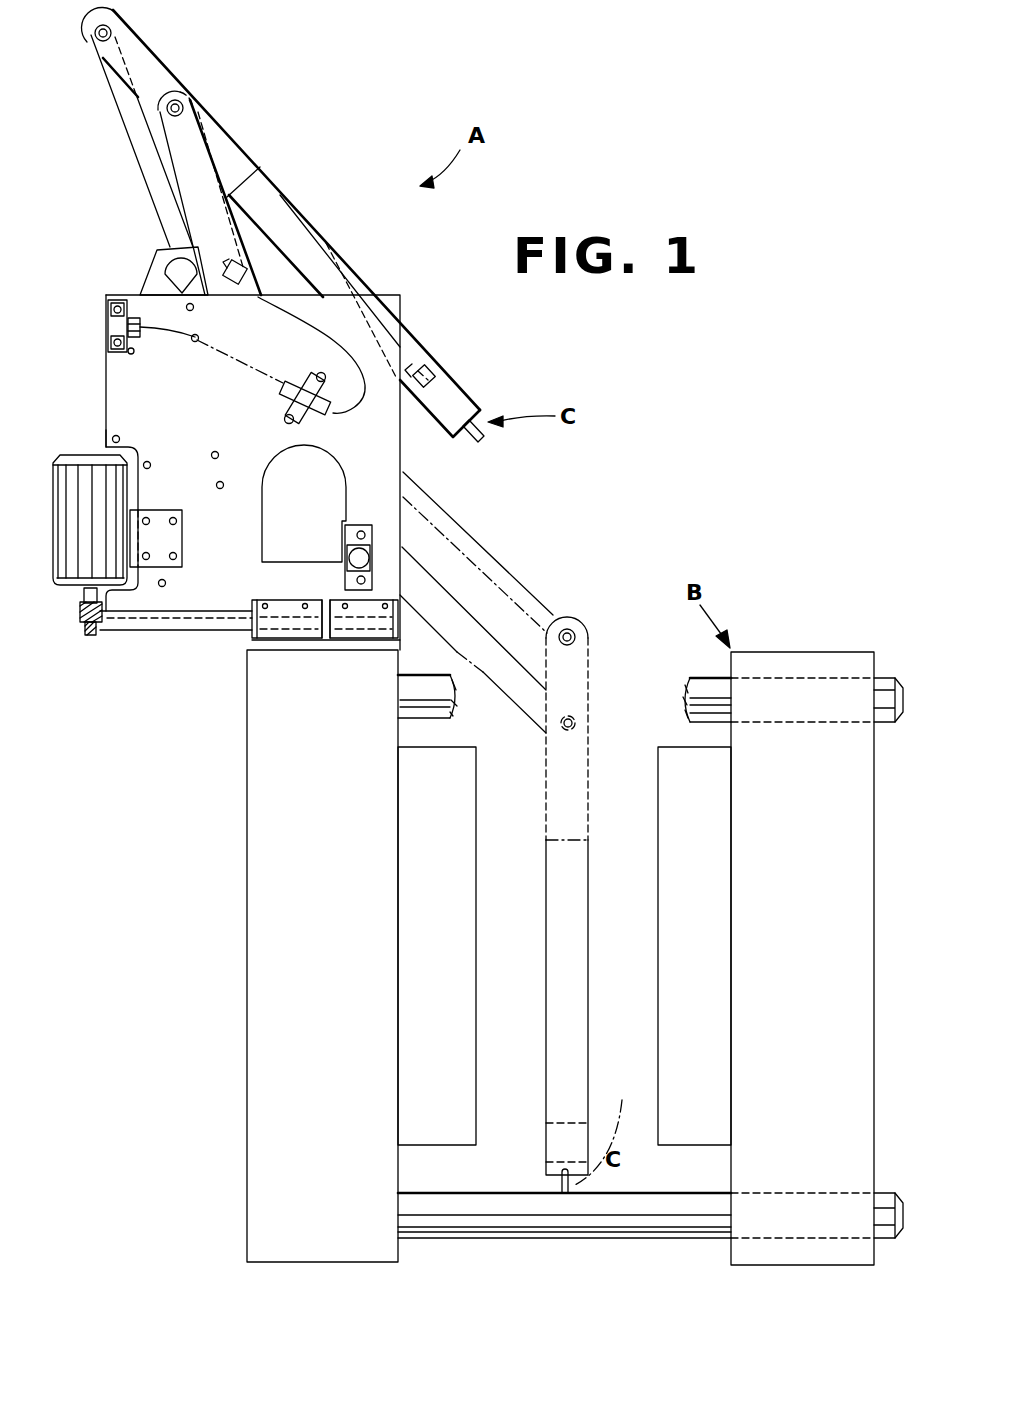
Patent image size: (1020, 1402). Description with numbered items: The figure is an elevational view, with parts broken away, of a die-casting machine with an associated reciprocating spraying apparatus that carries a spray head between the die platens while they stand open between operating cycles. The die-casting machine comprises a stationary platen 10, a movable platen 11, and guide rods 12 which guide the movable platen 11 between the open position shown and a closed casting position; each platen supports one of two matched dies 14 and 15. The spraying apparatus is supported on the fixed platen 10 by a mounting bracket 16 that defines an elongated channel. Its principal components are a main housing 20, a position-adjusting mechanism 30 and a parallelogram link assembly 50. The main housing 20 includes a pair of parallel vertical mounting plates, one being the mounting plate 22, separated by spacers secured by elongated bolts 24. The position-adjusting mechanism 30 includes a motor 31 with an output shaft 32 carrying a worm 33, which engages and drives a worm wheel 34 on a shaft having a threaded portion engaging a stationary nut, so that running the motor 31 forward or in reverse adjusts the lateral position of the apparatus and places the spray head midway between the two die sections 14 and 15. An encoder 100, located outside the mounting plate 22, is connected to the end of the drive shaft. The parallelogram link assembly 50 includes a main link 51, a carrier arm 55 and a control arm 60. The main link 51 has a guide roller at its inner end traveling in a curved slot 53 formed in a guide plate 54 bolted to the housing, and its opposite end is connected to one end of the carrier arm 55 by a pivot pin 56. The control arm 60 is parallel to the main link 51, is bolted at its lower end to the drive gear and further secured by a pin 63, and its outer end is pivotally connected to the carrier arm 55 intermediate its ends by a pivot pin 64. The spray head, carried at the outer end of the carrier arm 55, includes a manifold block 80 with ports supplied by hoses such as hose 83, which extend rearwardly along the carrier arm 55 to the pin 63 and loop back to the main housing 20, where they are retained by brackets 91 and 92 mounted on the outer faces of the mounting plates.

The stationary platen 10 is at (322, 956).
The movable platen 11 is at (802, 958).
The guide rods 12 is at (447, 693).
The matched die 14 is at (437, 946).
The matched die 15 is at (694, 946).
The mounting bracket 16 is at (293, 598).
The main housing 20 is at (95, 432).
The mounting plate 22 is at (375, 458).
The elongated bolts 24 is at (118, 436).
The position-adjusting mechanism 30 is at (100, 660).
The motor 31 is at (117, 520).
The output shaft 32 is at (82, 600).
The worm 33 is at (82, 617).
The worm wheel 34 is at (90, 637).
The parallelogram link assembly 50 is at (318, 125).
The main link 51 is at (140, 183).
The curved slot 53 is at (168, 275).
The guide plate 54 is at (152, 280).
The carrier arm 55 is at (340, 247).
The pivot pin 56 is at (110, 30).
The control arm 60 is at (242, 227).
The pin 63 is at (572, 727).
The pivot pin 64 is at (182, 105).
The manifold block 80 is at (472, 392).
The hose 83 is at (290, 383).
The bracket 91 is at (112, 323).
The bracket 92 is at (290, 393).
The encoder 100 is at (374, 557).